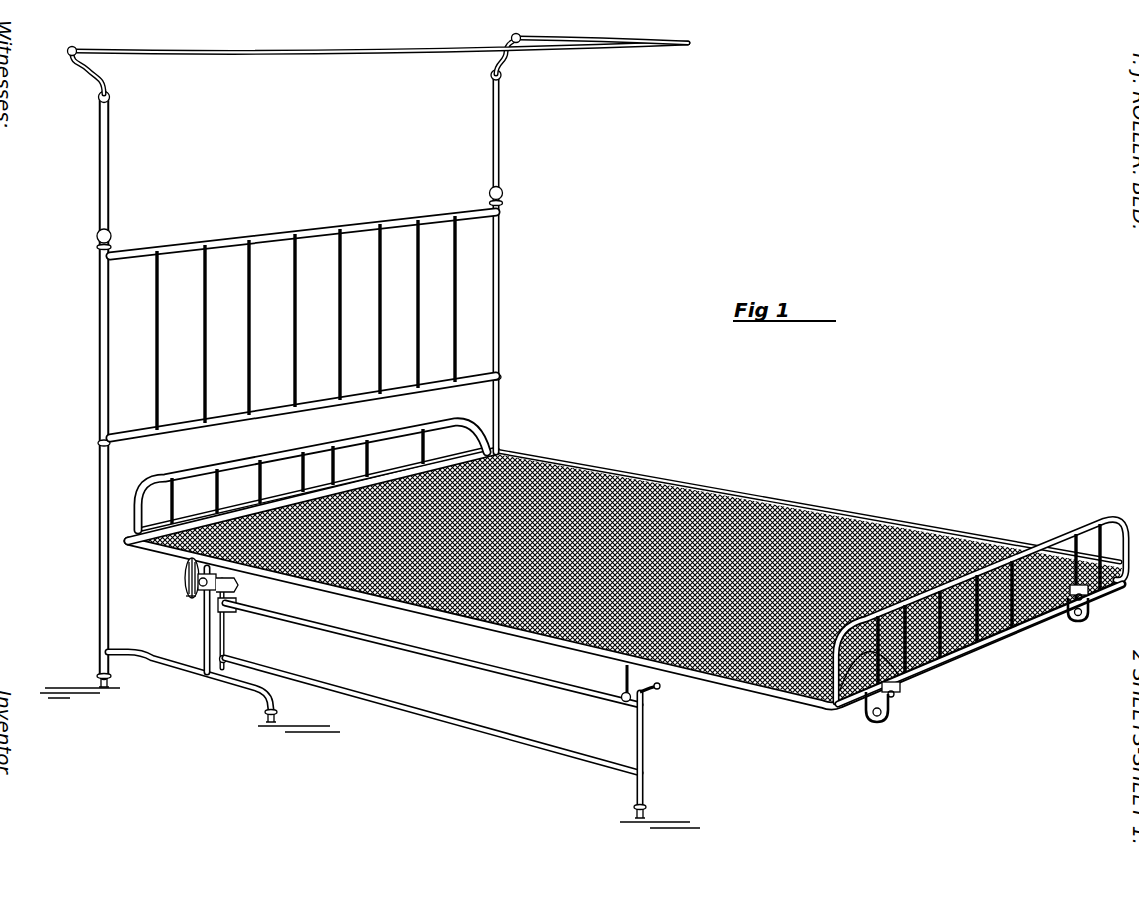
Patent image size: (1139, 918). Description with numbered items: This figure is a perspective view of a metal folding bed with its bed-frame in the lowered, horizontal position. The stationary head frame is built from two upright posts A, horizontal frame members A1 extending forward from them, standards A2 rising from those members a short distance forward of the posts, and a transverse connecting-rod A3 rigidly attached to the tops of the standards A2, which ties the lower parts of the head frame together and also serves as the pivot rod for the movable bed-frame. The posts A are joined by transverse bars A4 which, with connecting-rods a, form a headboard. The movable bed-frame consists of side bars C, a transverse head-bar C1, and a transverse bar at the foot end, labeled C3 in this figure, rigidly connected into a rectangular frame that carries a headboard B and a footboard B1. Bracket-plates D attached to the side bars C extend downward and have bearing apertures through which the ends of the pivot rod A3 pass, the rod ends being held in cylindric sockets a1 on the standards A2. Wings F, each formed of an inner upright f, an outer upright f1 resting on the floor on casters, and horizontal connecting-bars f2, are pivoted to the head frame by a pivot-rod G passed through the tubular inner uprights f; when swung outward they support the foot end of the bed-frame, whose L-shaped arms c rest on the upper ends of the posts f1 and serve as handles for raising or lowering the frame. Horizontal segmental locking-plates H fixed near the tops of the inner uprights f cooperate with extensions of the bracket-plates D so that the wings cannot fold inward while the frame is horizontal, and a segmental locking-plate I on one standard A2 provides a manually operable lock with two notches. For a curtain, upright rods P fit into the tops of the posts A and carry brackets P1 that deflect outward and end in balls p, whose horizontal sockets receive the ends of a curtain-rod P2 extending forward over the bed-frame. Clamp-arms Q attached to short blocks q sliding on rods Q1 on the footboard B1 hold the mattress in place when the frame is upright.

The upright post A is at (296, 387).
The horizontal frame member A1 is at (179, 675).
The standard A2 is at (204, 629).
The transverse connecting-rod A3 is at (237, 606).
The transverse bar A4 is at (365, 226).
The connecting-rod a is at (253, 331).
The cylindric socket a1 is at (197, 584).
The headboard B is at (312, 476).
The footboard B1 is at (1075, 536).
The side bar C is at (720, 494).
The transverse head-bar C1 is at (320, 490).
The foot frame rail C3 is at (990, 643).
The L-shaped arm c is at (622, 680).
The bracket-plate D is at (188, 572).
The wing F is at (432, 688).
The inner upright f is at (238, 651).
The outer upright f1 is at (648, 748).
The horizontal connecting-bar f2 is at (402, 729).
The pivot-rod G is at (228, 588).
The segmental locking-plate H is at (245, 641).
The segmental locking-plate I is at (190, 595).
The upright rod P is at (110, 170).
The bracket P1 is at (112, 72).
The curtain-rod P2 is at (436, 52).
The ball p is at (74, 46).
The clamp-arm Q is at (845, 716).
The rod Q1 is at (900, 650).
The block q is at (898, 678).